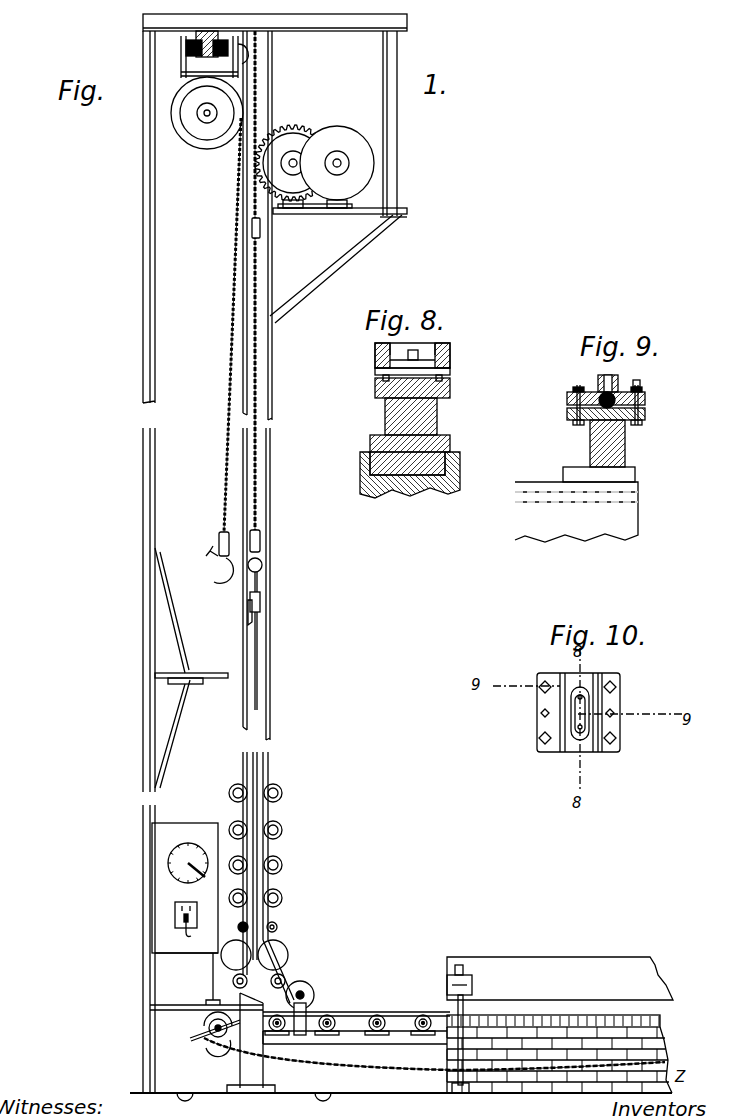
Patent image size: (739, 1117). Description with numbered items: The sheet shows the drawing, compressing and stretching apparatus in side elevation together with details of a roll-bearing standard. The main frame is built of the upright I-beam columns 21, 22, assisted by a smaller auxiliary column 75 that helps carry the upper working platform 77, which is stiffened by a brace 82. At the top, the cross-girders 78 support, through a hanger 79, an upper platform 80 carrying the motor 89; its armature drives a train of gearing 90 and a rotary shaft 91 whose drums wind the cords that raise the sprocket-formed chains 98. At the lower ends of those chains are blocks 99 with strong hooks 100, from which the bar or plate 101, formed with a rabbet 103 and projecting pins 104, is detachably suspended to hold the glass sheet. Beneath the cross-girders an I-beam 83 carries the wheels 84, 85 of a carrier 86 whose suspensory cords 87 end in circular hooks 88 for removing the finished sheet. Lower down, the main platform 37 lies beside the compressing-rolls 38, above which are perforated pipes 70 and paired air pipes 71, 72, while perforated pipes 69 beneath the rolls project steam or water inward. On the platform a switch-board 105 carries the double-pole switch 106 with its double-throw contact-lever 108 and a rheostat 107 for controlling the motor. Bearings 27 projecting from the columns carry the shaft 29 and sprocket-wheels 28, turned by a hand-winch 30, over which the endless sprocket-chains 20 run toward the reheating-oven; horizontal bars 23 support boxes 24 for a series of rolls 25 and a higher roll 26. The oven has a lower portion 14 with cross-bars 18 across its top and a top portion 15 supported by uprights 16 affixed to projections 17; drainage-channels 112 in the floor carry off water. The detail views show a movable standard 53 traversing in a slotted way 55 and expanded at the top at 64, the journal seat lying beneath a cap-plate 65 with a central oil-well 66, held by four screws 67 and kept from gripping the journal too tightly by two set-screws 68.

In FIG. 1, the cross-girders 78 is at (407, 24).
In FIG. 1, the hanger 79 is at (376, 123).
In FIG. 1, the upper platform 80 is at (335, 208).
In FIG. 1, the auxiliary column 75 is at (143, 222).
In FIG. 1, the wheel 84 is at (186, 44).
In FIG. 1, the I-beam 83 is at (183, 64).
In FIG. 1, the wheel 85 is at (252, 47).
In FIG. 1, the carrier 86 is at (182, 86).
In FIG. 1, the suspensory cords 87 is at (236, 228).
In FIG. 1, the train of gearing 90 is at (291, 136).
In FIG. 1, the motor 89 is at (358, 126).
In FIG. 1, the rotary shaft 91 is at (298, 168).
In FIG. 1, the cables or chains 98 is at (258, 343).
In FIG. 1, the blocks 99 is at (261, 540).
In FIG. 1, the hooks 100 is at (262, 565).
In FIG. 1, the bar or plate 101 is at (262, 596).
In FIG. 1, the rabbet 103 is at (261, 604).
In FIG. 1, the pins 104 is at (254, 620).
In FIG. 1, the circular hooks 88 is at (212, 570).
In FIG. 1, the upright column 21 is at (268, 517).
In FIG. 1, the working platform 77 is at (216, 662).
In FIG. 1, the brace 82 is at (177, 668).
In FIG. 1, the perforated pipe 71 is at (229, 839).
In FIG. 1, the perforated pipe 72 is at (278, 790).
In FIG. 1, the switch-board 105 is at (185, 888).
In FIG. 1, the rheostat 107 is at (183, 880).
In FIG. 1, the double-pole switch 106 is at (175, 914).
In FIG. 1, the double-throw contact-lever 108 is at (186, 934).
In FIG. 1, the perforated pipe 70 is at (260, 924).
In FIG. 1, the compressing-roll 38 is at (266, 954).
In FIG. 1, the platform 37 is at (206, 981).
In FIG. 1, the perforated pipe 69 is at (262, 983).
In FIG. 1, the roll 26 is at (312, 1001).
In FIG. 1, the roll 25 is at (375, 1015).
In FIG. 1, the bearings or boxes 24 is at (337, 1025).
In FIG. 1, the horizontal bars or plates 23 is at (355, 1046).
In FIG. 1, the upright column 22 is at (251, 1043).
In FIG. 1, the sprocket-wheel 28 is at (205, 1022).
In FIG. 1, the shaft 29 is at (210, 1038).
In FIG. 1, the hand-winch 30 is at (189, 1039).
In FIG. 1, the bearings 27 is at (232, 1044).
In FIG. 1, the drainage-channels 112 is at (401, 1089).
In FIG. 1, the sprocket-chains 20 is at (434, 1064).
In FIG. 1, the projections 17 is at (447, 985).
In FIG. 1, the uprights 16 is at (458, 1003).
In FIG. 1, the top portion of oven 15 is at (560, 978).
In FIG. 1, the cross-bars 18 is at (596, 1025).
In FIG. 1, the lower portion of oven 14 is at (505, 1024).
In FIG. 8, the set-screws 68 is at (418, 352).
In FIG. 9, the set-screws 68 is at (636, 382).
In FIG. 10, the set-screws 68 is at (540, 713).
In FIG. 8, the cap-plate 65 is at (452, 357).
In FIG. 9, the cap-plate 65 is at (646, 398).
In FIG. 10, the cap-plate 65 is at (585, 675).
In FIG. 8, the oil-well 66 is at (380, 352).
In FIG. 9, the oil-well 66 is at (606, 375).
In FIG. 10, the oil-well 66 is at (580, 735).
In FIG. 8, the screws 67 is at (450, 378).
In FIG. 9, the screws 67 is at (575, 388).
In FIG. 10, the screws 67 is at (542, 686).
In FIG. 8, the expansion 64 is at (450, 393).
In FIG. 9, the expansion 64 is at (619, 413).
In FIG. 8, the standard 53 is at (437, 420).
In FIG. 9, the standard 53 is at (626, 442).
In FIG. 8, the way 55 is at (460, 462).